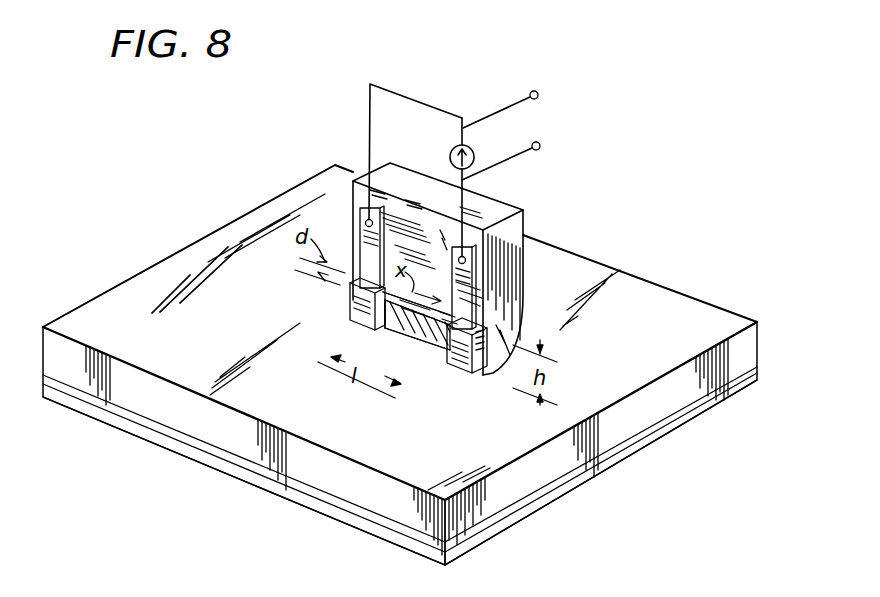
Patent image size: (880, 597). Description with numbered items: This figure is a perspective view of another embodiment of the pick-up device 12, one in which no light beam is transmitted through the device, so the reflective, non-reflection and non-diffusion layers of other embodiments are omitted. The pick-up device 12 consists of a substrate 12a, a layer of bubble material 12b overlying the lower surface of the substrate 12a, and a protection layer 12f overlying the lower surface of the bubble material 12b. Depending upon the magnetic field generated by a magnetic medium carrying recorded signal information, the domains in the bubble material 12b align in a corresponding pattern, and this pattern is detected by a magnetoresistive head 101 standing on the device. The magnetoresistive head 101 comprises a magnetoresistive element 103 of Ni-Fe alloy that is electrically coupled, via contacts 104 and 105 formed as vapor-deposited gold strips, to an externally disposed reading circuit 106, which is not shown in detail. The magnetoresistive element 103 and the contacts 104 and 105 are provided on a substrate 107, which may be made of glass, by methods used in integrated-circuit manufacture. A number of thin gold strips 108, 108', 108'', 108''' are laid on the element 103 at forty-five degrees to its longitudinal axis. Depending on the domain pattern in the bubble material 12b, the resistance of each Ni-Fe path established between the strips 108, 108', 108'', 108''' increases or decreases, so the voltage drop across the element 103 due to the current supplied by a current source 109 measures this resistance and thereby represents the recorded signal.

The pick-up device 12 is at (643, 274).
The substrate 12a is at (758, 344).
The bubble material 12b is at (757, 370).
The protection layer 12f is at (757, 380).
The magnetoresistive head 101 is at (274, 270).
The magnetoresistive element 103 is at (348, 300).
The contact 104 is at (362, 234).
The contact 105 is at (466, 278).
The reading circuit 106 is at (549, 126).
The substrate 107 is at (490, 206).
The thin gold strip 108 is at (380, 321).
The thin gold strip 108' is at (366, 333).
The thin gold strip 108'' is at (414, 331).
The thin gold strip 108''' is at (421, 367).
The current source 109 is at (450, 150).